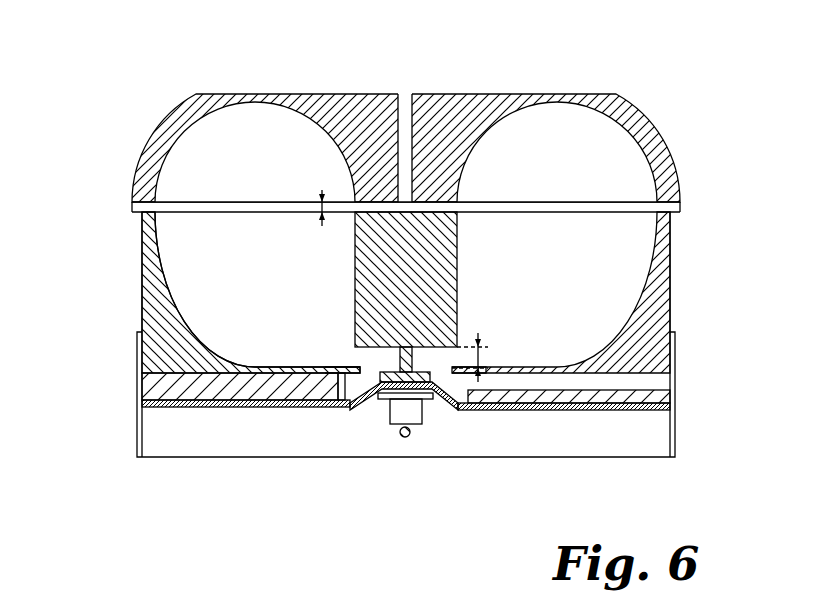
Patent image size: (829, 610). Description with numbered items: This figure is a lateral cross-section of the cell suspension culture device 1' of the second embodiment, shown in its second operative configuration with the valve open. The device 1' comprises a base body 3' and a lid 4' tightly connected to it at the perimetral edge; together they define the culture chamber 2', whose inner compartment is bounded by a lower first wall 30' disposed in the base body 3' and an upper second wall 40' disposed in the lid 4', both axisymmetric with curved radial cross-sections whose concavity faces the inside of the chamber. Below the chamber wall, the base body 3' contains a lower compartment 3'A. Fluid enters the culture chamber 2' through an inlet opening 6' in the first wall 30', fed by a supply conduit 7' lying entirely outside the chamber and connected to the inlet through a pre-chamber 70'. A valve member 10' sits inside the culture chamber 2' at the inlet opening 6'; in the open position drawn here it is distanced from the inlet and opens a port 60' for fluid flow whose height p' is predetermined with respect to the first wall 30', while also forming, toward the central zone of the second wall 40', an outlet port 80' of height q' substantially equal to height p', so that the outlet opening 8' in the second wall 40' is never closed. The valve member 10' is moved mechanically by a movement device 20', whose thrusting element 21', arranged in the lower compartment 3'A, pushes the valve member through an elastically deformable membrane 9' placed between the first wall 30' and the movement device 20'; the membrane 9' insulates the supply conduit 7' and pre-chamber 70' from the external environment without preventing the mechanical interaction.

The cell suspension culture device 1' is at (410, 281).
The culture chamber 2' is at (257, 289).
The base body 3' is at (363, 364).
The lower compartment 3'A is at (406, 424).
The lid 4' is at (406, 110).
The inlet opening 6' is at (406, 440).
The supply conduit 7' is at (572, 449).
The outlet opening 8' is at (409, 114).
The membrane 9' is at (240, 444).
The valve member 10' is at (449, 279).
The movement device 20' is at (436, 471).
The thrusting element 21' is at (388, 477).
The first wall 30' is at (215, 292).
The second wall 40' is at (257, 114).
The port 60' is at (378, 350).
The pre-chamber 70' is at (367, 444).
The outlet port 80' is at (406, 182).
The height of the port p' is at (495, 351).
The height of the outlet port q' is at (291, 193).